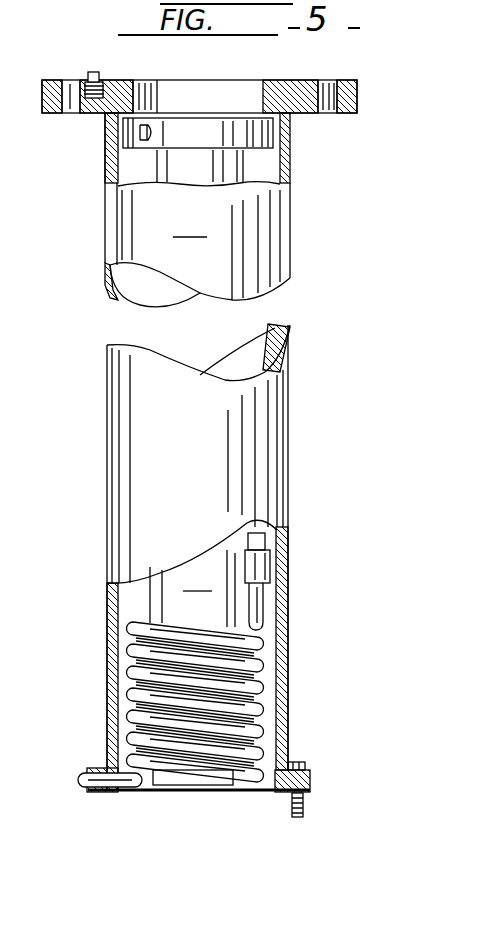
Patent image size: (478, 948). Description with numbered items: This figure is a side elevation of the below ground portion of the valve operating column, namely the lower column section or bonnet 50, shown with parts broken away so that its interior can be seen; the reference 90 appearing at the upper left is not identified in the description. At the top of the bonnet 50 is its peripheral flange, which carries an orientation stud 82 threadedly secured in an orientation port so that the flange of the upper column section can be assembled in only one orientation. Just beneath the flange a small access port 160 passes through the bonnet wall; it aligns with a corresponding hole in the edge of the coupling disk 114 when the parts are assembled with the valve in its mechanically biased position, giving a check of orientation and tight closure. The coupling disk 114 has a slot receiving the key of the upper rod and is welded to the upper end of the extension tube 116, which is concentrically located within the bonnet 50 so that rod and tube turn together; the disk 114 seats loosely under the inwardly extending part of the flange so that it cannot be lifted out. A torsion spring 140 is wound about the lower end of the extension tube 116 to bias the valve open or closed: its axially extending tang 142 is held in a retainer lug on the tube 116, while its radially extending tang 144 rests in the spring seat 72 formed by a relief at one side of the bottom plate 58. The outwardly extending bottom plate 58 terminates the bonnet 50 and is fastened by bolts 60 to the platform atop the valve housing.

The housing 90 is at (5, 6).
The orientation stud 82 is at (91, 70).
The access port 160 is at (110, 132).
The coupling disk 114 is at (262, 137).
The bonnet 50 is at (288, 414).
The axially extending spring tang 142 is at (258, 541).
The extension tube 116 is at (197, 655).
The torsion spring 140 is at (255, 668).
The bolt 60 is at (305, 762).
The bottom plate 58 is at (310, 783).
The radially extending spring tang 144 is at (80, 778).
The spring seat 72 is at (98, 790).